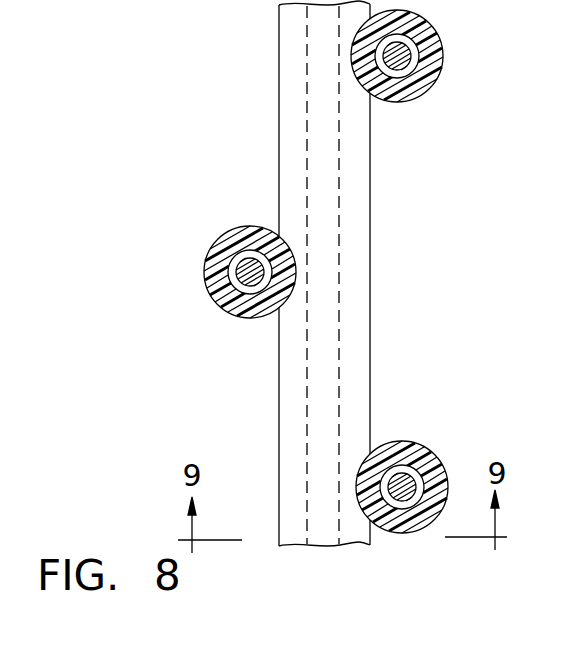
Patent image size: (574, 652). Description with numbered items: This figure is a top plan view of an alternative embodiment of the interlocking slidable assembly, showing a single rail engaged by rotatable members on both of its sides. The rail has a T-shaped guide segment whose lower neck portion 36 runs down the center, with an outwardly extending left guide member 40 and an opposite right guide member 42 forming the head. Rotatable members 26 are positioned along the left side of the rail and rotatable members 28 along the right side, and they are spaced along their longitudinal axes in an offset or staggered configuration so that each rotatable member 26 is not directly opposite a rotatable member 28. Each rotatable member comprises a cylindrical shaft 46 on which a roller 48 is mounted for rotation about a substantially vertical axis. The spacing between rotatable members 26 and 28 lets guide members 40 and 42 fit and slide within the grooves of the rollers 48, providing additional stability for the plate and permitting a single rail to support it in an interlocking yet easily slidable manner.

The left set of rotatable members 26 is at (216, 341).
The right set of rotatable members 28 is at (398, 144).
The lower neck portion 36 is at (320, 132).
The left guide member 40 is at (290, 93).
The right guide member 42 is at (360, 233).
The cylindrical shaft 46 is at (212, 292).
The roller 48 is at (233, 242).